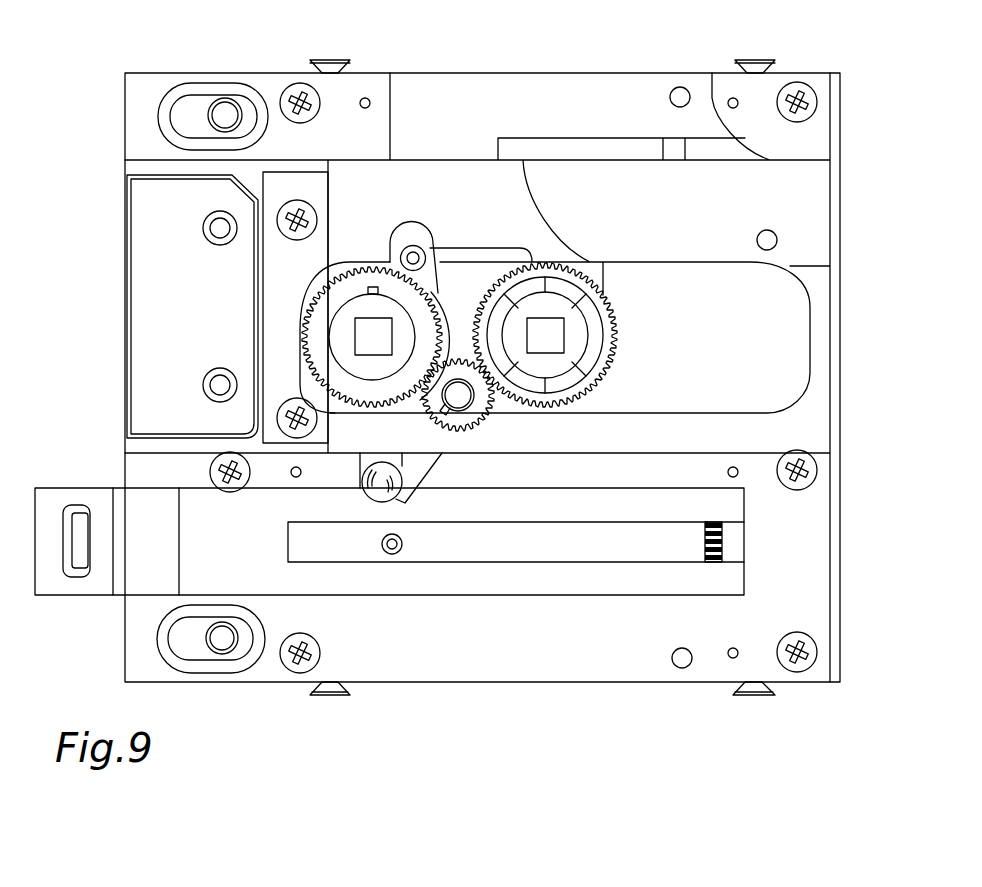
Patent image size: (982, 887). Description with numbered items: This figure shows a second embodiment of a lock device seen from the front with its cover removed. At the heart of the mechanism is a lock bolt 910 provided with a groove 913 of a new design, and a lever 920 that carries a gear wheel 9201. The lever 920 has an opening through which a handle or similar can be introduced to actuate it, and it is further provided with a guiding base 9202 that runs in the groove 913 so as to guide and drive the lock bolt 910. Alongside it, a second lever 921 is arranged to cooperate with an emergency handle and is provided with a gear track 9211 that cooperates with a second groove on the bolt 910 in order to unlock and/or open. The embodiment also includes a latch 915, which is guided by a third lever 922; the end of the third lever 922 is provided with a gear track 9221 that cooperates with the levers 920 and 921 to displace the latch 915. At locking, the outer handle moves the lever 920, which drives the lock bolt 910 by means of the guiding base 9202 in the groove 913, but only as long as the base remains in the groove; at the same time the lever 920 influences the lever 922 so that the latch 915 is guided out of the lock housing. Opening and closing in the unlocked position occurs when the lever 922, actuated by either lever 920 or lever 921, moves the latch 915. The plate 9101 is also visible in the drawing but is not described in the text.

The lock bolt 910 is at (638, 200).
The cover plate 9101 is at (157, 338).
The groove 913 is at (405, 228).
The lever 920 is at (357, 285).
The gear wheel 9201 is at (303, 310).
The guiding base 9202 is at (418, 254).
The second lever 921 is at (590, 387).
The gear track 9211 is at (614, 318).
The gear track 9221 is at (497, 408).
The third lever 922 is at (427, 462).
The latch 915 is at (142, 560).